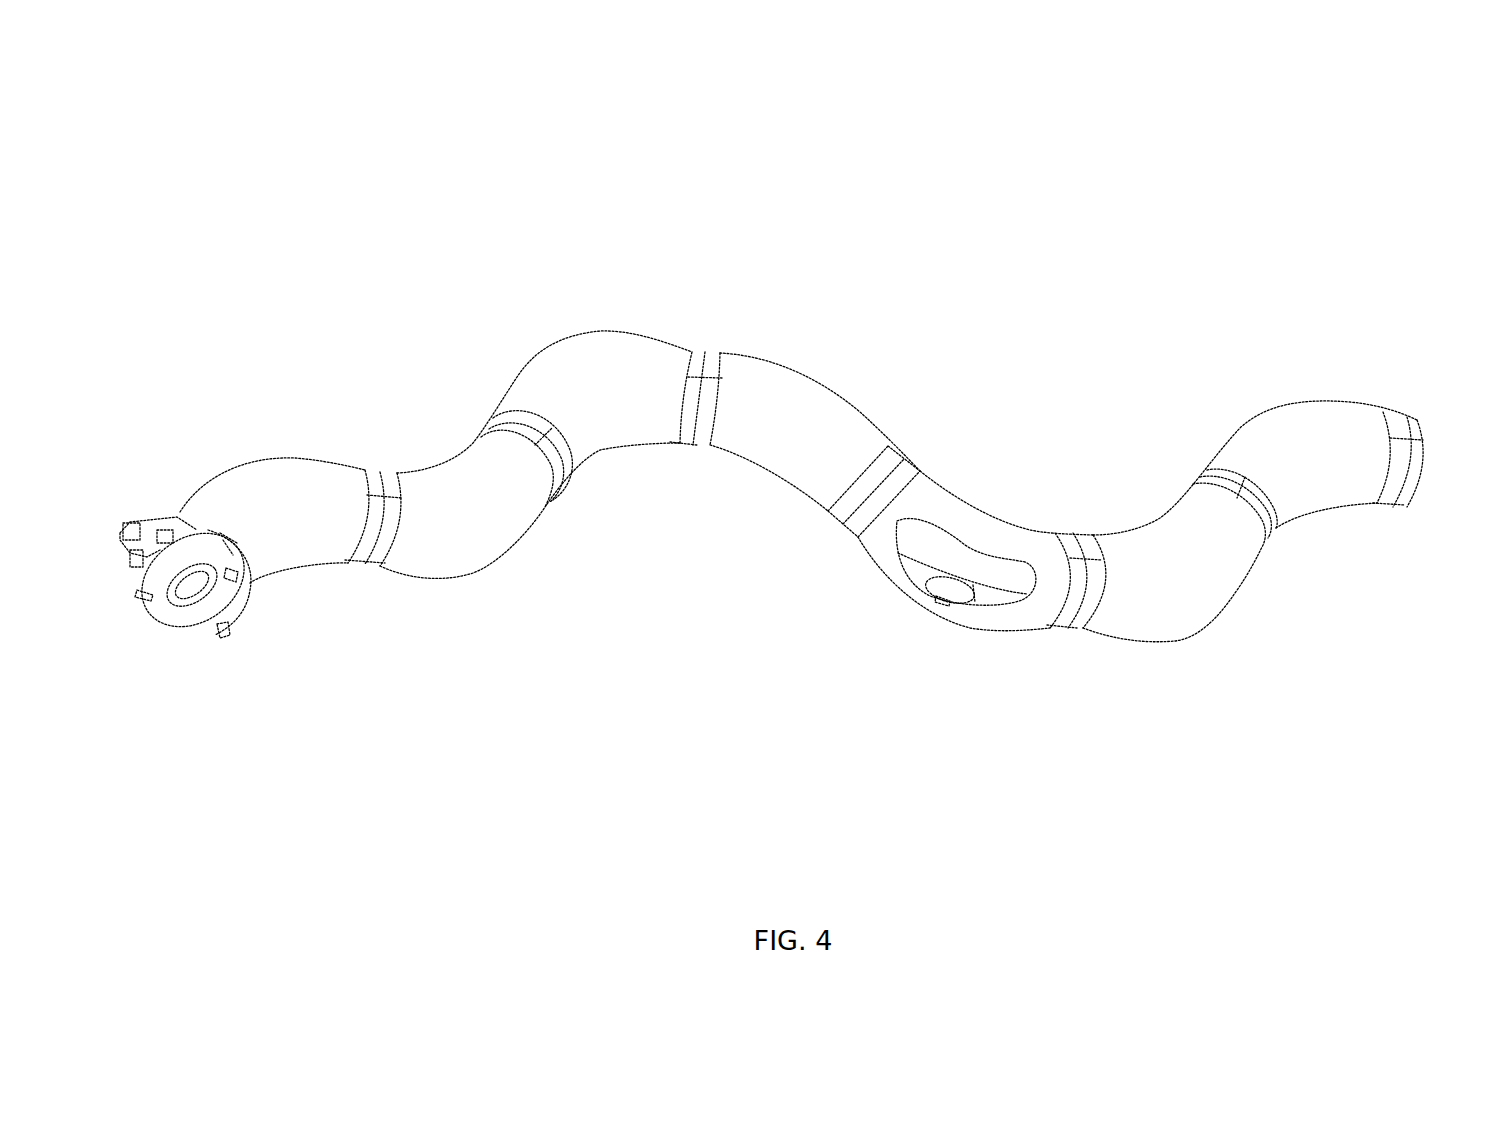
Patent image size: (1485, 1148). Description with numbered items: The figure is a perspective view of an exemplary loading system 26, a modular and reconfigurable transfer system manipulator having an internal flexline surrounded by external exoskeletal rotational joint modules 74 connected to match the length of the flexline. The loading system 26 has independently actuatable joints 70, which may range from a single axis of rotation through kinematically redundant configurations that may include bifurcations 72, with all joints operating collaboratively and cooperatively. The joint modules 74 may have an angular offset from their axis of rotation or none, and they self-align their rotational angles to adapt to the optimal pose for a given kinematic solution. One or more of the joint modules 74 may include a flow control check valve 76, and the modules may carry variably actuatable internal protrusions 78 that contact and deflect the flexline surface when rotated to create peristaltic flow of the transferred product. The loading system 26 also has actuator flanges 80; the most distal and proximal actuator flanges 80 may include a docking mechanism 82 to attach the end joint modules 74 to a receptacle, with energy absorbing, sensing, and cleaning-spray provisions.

The loading system 26 is at (222, 137).
The independently actuatable joints 70 is at (200, 540).
The bifurcations 72 is at (1258, 395).
The rotational joint modules 74 is at (253, 498).
The flow control check valve 76 is at (193, 624).
The internal protrusions 78 is at (935, 583).
The actuator flanges 80 is at (170, 608).
The docking mechanism 82 is at (243, 657).